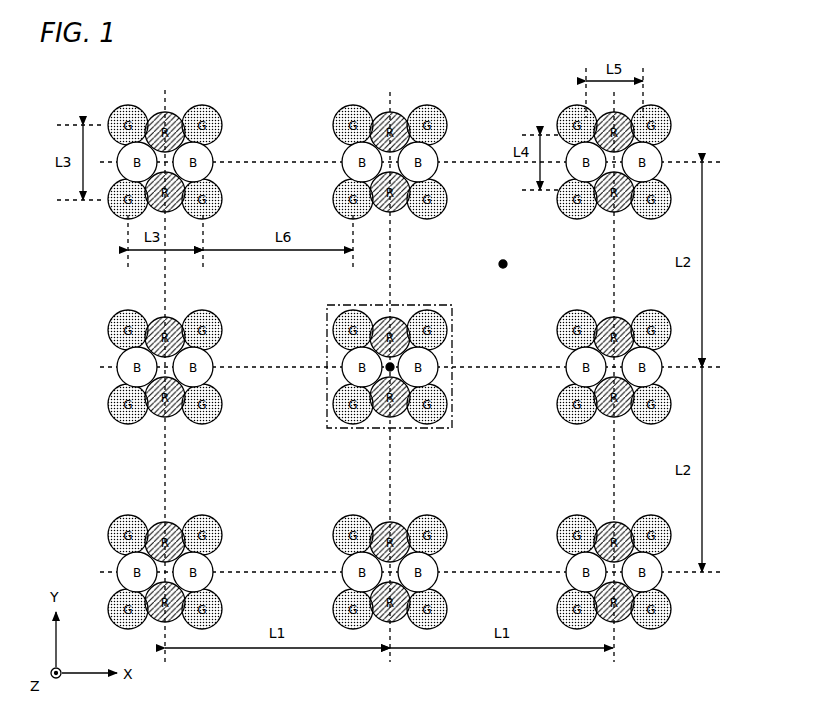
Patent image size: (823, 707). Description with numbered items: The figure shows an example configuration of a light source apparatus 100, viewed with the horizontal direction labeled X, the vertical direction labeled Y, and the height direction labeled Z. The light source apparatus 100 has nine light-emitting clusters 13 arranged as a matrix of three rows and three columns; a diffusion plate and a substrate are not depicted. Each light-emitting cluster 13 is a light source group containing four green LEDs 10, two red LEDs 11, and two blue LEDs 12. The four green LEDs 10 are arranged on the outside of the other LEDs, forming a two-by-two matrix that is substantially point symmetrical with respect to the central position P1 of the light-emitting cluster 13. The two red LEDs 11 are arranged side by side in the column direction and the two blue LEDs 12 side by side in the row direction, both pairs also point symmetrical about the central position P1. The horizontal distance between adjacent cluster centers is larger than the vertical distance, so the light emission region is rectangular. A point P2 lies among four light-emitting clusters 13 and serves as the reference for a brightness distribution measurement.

The green LED 10 is at (440, 335).
The red LED 11 is at (396, 318).
The blue LED 12 is at (432, 373).
The light-emitting cluster 13 is at (454, 420).
The light source apparatus 100 is at (688, 632).
The central position of the light-emitting cluster P1 is at (346, 378).
The point P2 is at (500, 262).